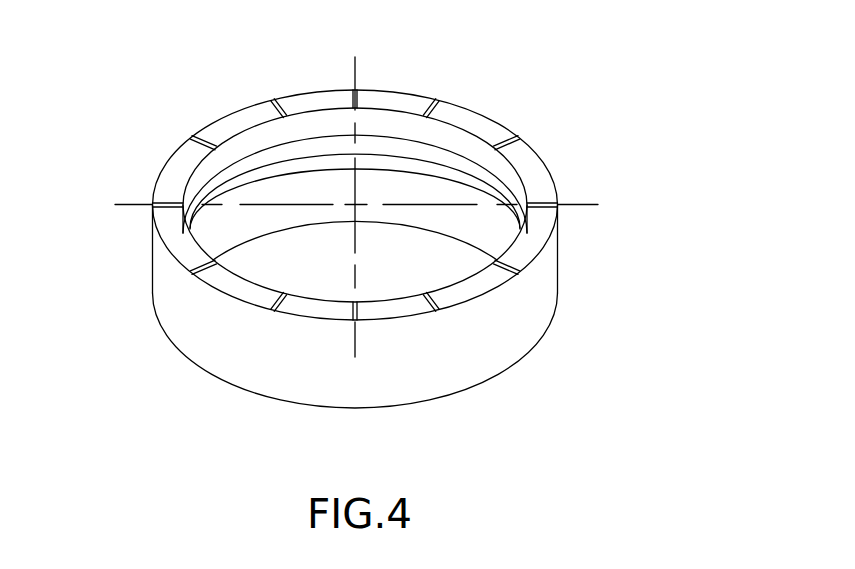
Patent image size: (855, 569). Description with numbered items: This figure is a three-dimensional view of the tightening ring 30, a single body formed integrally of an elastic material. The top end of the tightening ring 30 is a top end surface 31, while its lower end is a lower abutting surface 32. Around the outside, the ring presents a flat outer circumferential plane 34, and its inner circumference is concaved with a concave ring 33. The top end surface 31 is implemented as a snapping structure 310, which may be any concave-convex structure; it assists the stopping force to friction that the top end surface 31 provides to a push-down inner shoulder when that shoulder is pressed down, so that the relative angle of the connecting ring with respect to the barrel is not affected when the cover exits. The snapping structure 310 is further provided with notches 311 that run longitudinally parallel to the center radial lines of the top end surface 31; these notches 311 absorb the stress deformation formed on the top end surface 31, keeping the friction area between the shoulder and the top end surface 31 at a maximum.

The tightening ring 30 is at (410, 226).
The top end surface 31 is at (545, 147).
The snapping structure 310 is at (467, 118).
The notches 311 is at (425, 98).
The lower abutting surface 32 is at (485, 383).
The concave ring 33 is at (260, 159).
The outer circumferential plane 34 is at (152, 270).